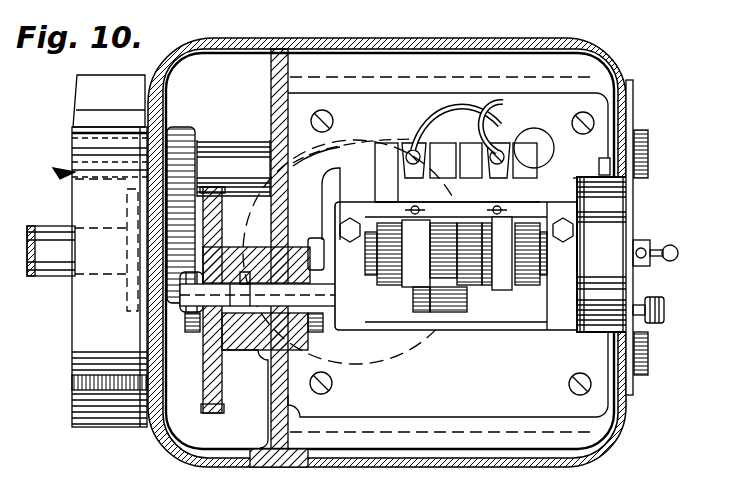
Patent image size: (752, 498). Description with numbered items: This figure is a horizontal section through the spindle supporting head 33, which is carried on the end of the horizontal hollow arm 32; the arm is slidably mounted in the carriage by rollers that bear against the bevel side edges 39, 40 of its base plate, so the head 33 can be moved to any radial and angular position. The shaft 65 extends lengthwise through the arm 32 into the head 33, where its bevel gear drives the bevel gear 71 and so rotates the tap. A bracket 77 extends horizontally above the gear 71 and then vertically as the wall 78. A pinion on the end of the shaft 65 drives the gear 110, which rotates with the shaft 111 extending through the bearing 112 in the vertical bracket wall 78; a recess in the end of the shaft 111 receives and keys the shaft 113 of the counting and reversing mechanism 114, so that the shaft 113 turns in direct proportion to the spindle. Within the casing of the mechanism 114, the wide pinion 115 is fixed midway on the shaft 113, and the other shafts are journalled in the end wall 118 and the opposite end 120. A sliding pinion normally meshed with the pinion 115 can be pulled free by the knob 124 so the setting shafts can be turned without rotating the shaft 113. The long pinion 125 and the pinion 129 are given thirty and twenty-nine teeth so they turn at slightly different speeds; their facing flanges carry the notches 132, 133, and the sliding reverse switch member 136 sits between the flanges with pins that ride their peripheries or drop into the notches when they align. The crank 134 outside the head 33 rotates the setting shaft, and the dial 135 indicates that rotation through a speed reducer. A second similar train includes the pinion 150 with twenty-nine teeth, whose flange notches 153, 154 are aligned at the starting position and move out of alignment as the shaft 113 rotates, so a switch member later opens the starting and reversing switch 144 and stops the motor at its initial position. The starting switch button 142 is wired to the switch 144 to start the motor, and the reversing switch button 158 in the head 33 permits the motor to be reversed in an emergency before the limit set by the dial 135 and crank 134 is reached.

The spindle supporting head 33 is at (167, 61).
The bevel side edge 39 is at (88, 93).
The vertical bracket wall 78 is at (272, 110).
The bracket 77 is at (297, 392).
The horizontal hollow arm 32 is at (80, 305).
The bevel side edge 40 is at (72, 404).
The shaft 65 is at (40, 226).
The bevel gear 71 is at (272, 215).
The gear 110 is at (204, 393).
The shaft 111 is at (193, 334).
The bearing 112 is at (265, 380).
The shaft 113 is at (258, 268).
The pinion 150 is at (372, 290).
The pinion 129 is at (533, 289).
The end wall 118 is at (353, 316).
The counting and reversing mechanism 114 is at (457, 312).
The wide pinion 115 is at (467, 316).
The end wall 120 is at (560, 316).
The notch 153 is at (420, 230).
The notch 154 is at (395, 228).
The long pinion 125 is at (430, 160).
The starting and reversing switch 144 is at (455, 230).
The sliding reverse switch member 136 is at (476, 160).
The notch 133 is at (490, 245).
The notch 132 is at (513, 216).
The dial 135 is at (625, 237).
The starting switch button 142 is at (650, 170).
The crank 134 is at (660, 250).
The knob 124 is at (648, 299).
The reversing switch button 158 is at (650, 352).